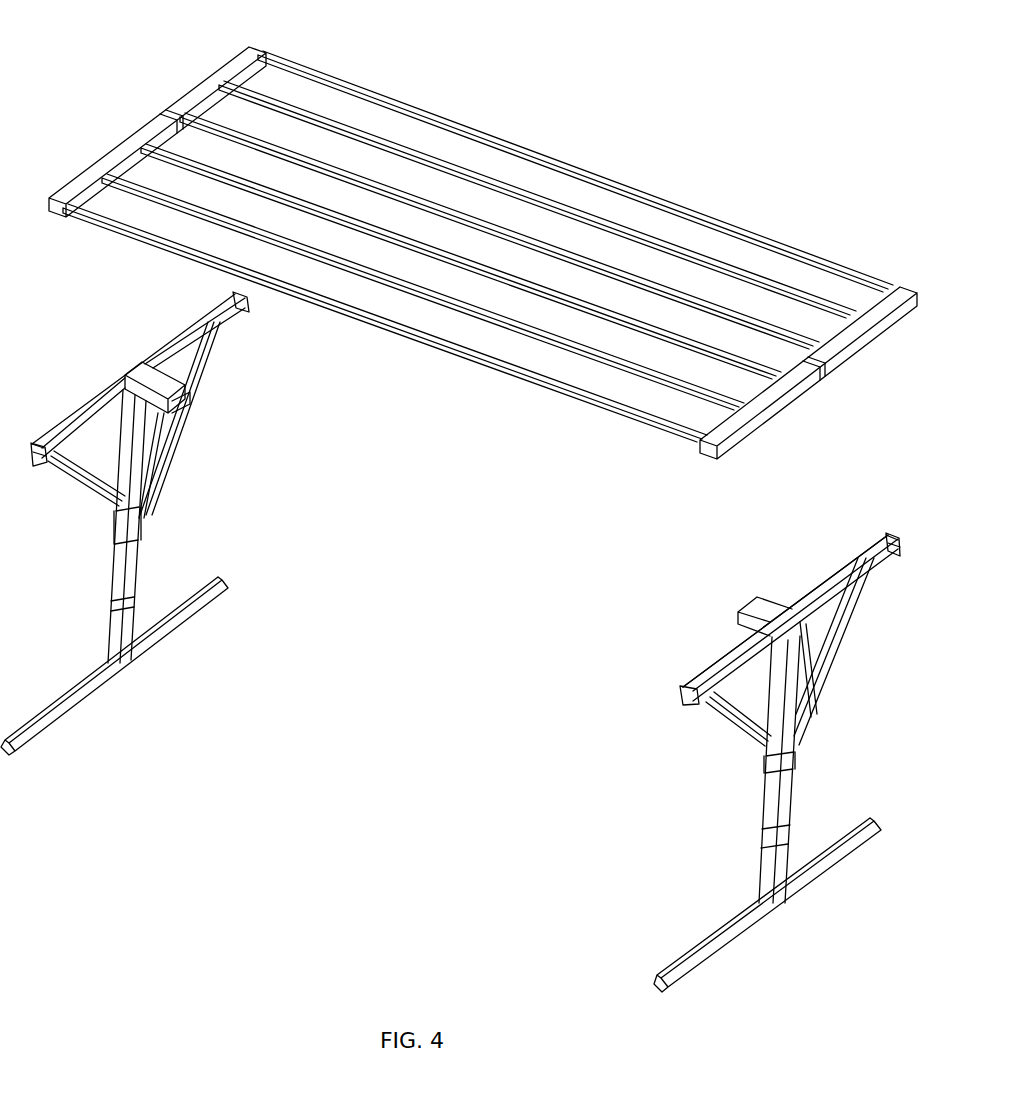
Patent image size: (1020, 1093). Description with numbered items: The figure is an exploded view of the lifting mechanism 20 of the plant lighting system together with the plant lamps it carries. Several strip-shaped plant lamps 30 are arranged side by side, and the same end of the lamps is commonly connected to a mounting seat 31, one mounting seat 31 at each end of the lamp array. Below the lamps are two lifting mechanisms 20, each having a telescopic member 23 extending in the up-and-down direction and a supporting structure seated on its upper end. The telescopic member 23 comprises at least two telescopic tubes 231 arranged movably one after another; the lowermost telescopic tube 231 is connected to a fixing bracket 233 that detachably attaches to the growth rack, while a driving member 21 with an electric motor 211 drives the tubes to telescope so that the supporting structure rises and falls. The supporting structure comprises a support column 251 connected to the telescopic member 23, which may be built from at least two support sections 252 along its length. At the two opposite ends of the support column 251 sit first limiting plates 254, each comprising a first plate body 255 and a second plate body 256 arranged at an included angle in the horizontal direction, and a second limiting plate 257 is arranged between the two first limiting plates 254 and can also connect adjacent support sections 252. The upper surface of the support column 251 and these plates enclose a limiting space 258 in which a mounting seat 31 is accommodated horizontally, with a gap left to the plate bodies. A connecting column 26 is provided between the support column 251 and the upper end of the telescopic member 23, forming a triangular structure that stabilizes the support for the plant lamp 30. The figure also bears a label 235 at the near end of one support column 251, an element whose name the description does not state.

The lifting mechanism 20 is at (108, 586).
The driving member 21 is at (192, 394).
The electric motor 211 is at (187, 412).
The telescopic member 23 is at (242, 642).
The telescopic tube 231 is at (137, 514).
The fixing bracket 233 is at (93, 682).
The end cap 235 is at (683, 715).
The support column 251 is at (738, 650).
The support section 252 is at (213, 355).
The first limiting plate 254 is at (74, 376).
The first plate body 255 is at (50, 442).
The second plate body 256 is at (38, 446).
The second limiting plate 257 is at (137, 365).
The limiting space 258 is at (226, 311).
The connecting column 26 is at (103, 498).
The plant lamp 30 is at (312, 64).
The mounting seat 31 is at (268, 52).